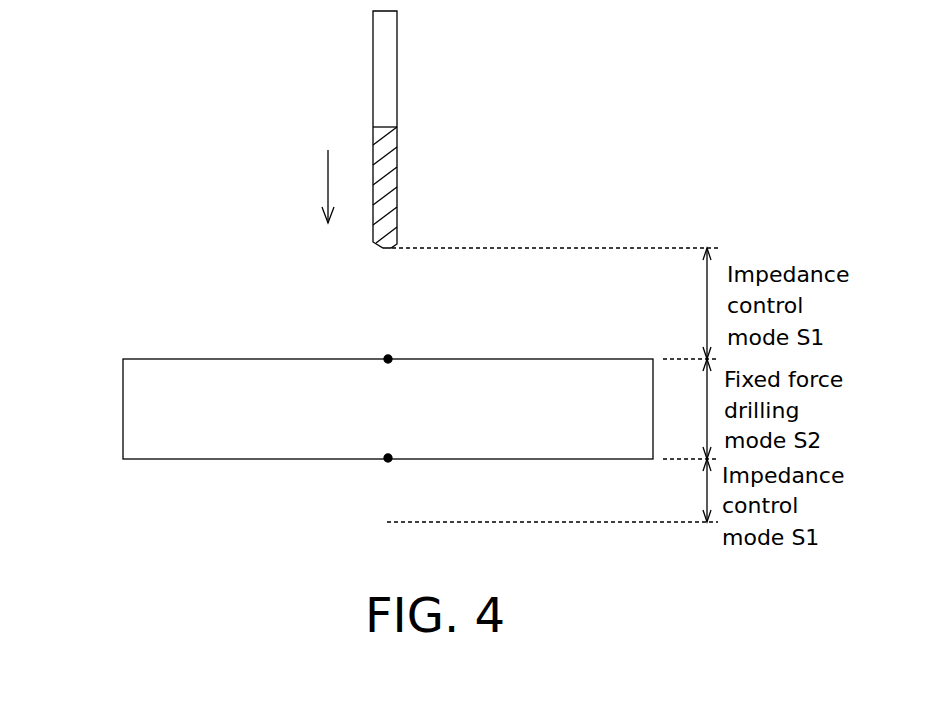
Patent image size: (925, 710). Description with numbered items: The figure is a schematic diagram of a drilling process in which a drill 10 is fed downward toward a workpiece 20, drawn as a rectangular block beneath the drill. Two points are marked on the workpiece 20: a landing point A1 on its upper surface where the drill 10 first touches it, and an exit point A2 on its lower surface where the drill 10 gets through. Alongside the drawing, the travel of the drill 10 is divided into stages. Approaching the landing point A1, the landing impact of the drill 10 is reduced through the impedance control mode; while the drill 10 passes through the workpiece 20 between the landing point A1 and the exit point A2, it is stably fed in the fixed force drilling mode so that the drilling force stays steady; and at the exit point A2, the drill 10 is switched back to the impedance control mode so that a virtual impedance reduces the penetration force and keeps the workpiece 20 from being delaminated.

The drill 10 is at (397, 63).
The workpiece 20 is at (123, 409).
The landing point A1 is at (391, 356).
The exit point A2 is at (391, 461).